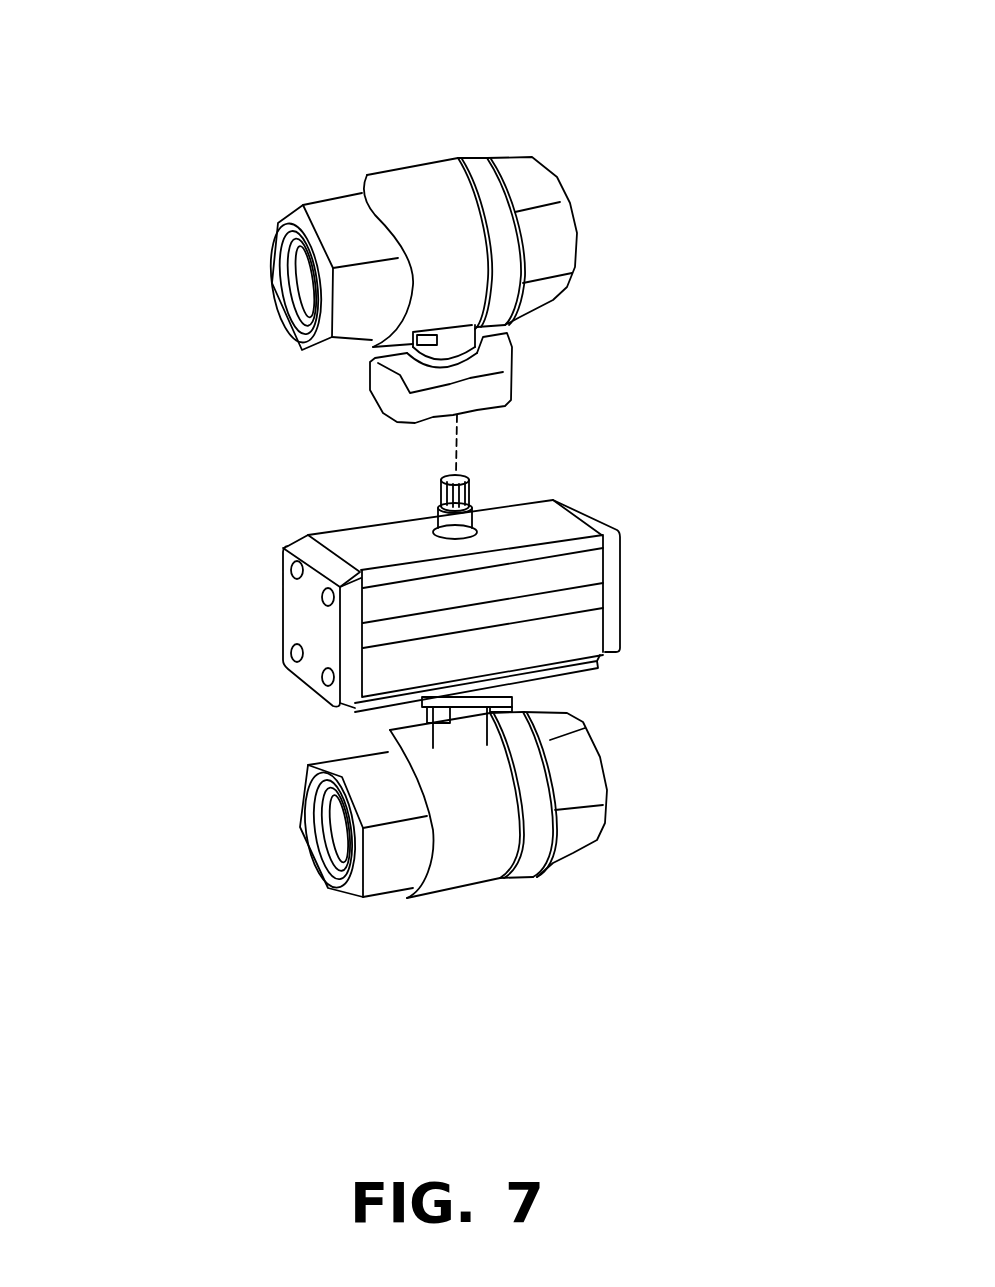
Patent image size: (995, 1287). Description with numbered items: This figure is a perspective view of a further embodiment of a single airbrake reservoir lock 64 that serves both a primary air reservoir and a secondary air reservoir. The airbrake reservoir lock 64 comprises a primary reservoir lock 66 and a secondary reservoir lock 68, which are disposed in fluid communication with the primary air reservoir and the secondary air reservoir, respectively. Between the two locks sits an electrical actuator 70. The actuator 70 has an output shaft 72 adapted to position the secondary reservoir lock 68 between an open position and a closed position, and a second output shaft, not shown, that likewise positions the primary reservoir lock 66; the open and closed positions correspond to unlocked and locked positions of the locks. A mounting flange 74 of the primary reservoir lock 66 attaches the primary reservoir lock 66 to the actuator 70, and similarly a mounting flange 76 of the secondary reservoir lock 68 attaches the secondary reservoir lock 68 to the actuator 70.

The airbrake reservoir lock 64 is at (538, 859).
The primary reservoir lock 66 is at (423, 897).
The secondary reservoir lock 68 is at (424, 168).
The electrical actuator 70 is at (283, 570).
The output shaft 72 is at (470, 493).
The mounting flange 74 is at (510, 702).
The mounting flange 76 is at (400, 410).